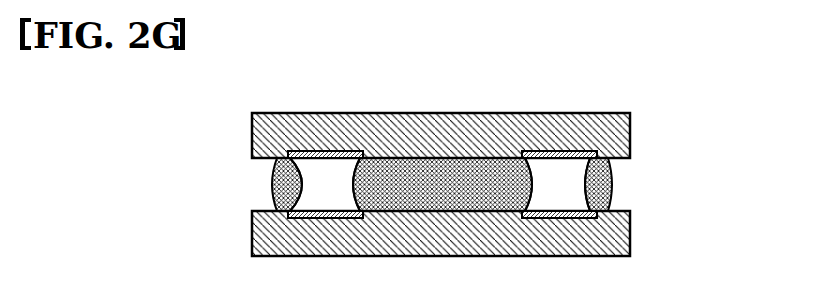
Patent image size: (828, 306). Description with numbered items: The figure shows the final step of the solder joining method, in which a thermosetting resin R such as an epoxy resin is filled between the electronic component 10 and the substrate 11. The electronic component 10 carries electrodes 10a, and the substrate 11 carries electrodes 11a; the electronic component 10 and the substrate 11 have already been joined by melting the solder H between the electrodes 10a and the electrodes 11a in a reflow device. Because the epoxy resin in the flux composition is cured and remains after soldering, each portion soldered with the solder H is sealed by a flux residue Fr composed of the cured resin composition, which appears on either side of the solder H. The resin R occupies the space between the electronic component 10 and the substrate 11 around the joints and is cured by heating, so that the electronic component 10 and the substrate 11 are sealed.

The thermosetting resin R is at (497, 160).
The electronic component 10 is at (630, 119).
The electrodes of the electronic component 10a is at (596, 153).
The flux residue Fr is at (610, 167).
The solder H is at (583, 192).
The electrodes of the substrate 11a is at (630, 215).
The substrate 11 is at (630, 240).